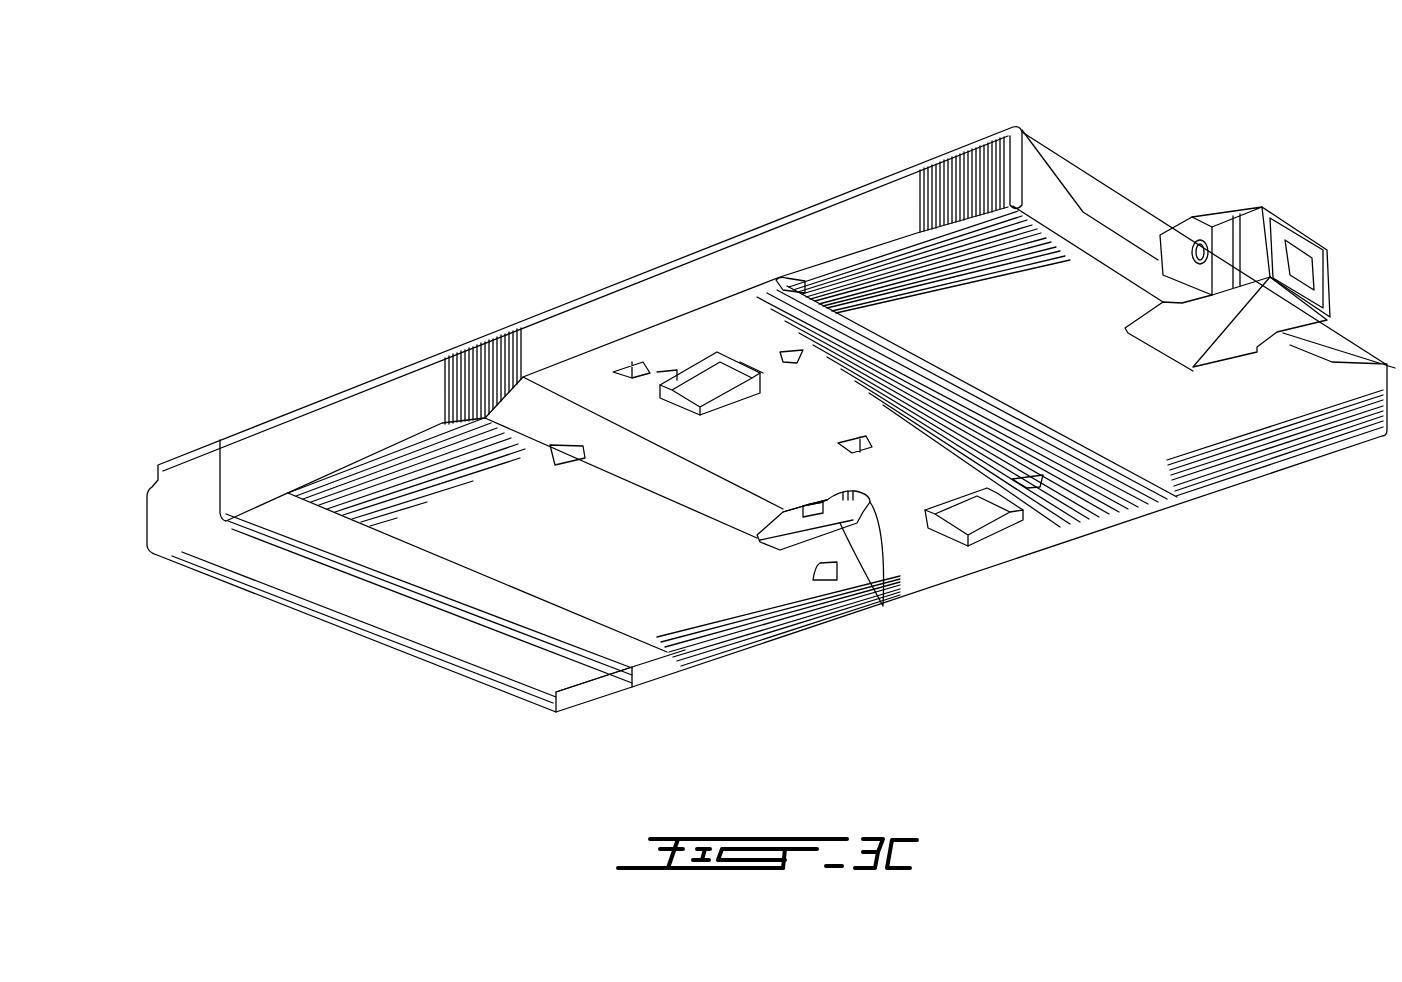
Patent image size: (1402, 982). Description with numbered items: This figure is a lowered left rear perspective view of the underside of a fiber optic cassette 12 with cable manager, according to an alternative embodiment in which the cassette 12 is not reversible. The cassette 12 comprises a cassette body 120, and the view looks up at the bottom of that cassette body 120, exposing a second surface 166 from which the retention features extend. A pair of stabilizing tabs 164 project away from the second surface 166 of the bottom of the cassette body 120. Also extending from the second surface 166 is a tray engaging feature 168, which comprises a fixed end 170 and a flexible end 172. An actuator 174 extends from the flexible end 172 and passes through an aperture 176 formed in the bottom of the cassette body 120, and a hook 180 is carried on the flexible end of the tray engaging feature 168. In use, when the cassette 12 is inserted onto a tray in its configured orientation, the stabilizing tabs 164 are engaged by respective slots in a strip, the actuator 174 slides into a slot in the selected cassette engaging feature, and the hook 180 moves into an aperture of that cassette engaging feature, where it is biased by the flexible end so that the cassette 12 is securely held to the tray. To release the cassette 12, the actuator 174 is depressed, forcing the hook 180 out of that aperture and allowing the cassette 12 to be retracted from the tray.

The cassette 12 is at (283, 208).
The cassette body 120 is at (1228, 486).
The stabilizing tabs 164 is at (707, 397).
The second surface 166 is at (716, 443).
The tray engaging feature 168 is at (808, 540).
The fixed end 170 is at (758, 543).
The flexible end 172 is at (842, 522).
The actuator 174 is at (808, 505).
The aperture 176 is at (918, 580).
The hook 180 is at (830, 495).